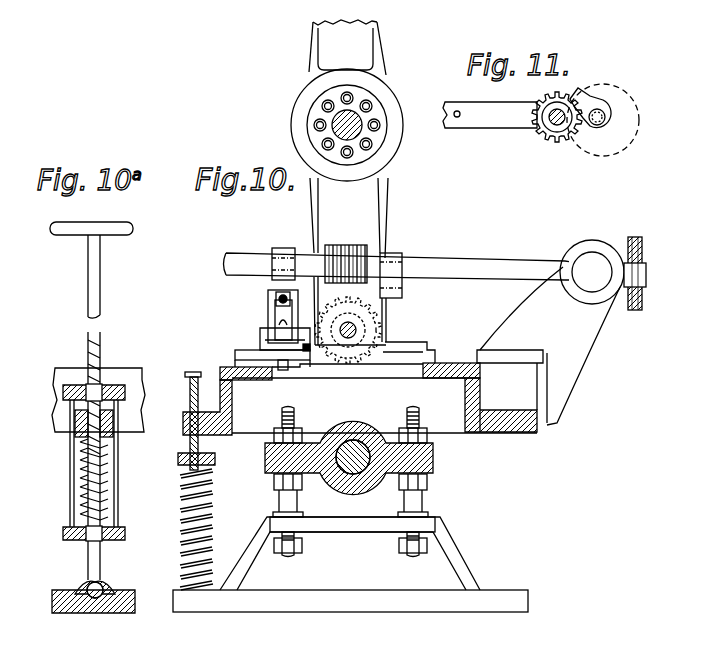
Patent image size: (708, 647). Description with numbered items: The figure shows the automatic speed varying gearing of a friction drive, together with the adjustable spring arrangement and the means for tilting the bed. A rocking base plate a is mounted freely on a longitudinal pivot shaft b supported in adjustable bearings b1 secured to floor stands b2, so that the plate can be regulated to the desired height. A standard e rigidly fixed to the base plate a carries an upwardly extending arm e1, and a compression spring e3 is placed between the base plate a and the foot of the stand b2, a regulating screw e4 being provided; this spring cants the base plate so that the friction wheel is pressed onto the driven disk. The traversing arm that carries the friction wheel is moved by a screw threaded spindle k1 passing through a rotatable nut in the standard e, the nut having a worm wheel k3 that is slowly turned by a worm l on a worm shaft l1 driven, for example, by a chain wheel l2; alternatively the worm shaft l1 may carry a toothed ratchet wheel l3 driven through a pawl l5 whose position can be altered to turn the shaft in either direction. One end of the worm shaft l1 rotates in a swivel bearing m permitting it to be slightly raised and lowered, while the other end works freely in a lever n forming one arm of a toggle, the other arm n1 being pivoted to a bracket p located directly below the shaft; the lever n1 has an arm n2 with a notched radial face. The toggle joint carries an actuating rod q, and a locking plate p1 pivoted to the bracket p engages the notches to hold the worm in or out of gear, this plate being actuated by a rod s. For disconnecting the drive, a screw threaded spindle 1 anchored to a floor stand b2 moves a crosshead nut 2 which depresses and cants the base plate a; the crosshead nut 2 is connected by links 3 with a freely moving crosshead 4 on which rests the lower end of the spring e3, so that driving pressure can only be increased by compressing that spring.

In FIG. 10, the standard e is at (368, 197).
In FIG. 10, the upwardly extending arm e1 is at (360, 56).
In FIG. 10, the compression spring e3 is at (213, 527).
In FIG. 10A, the compression spring e3 is at (85, 488).
In FIG. 10, the regulating screw e4 is at (190, 395).
In FIG. 10, the worm l is at (344, 247).
In FIG. 10, the worm shaft l1 is at (485, 264).
In FIG. 10, the chain wheel l2 is at (628, 250).
In FIG. 11, the toothed ratchet wheel l3 is at (545, 99).
In FIG. 11, the pawl l5 is at (607, 95).
In FIG. 10, the swivel bearing m is at (590, 261).
In FIG. 10, the lever n is at (280, 251).
In FIG. 10, the toggle arm n1 is at (268, 318).
In FIG. 10, the arm n2 is at (283, 372).
In FIG. 10, the actuating rod q is at (275, 293).
In FIG. 10, the bracket p is at (258, 336).
In FIG. 10, the locking plate p1 is at (255, 352).
In FIG. 10, the rod s is at (307, 352).
In FIG. 10, the screw threaded spindle k1 is at (356, 331).
In FIG. 10, the worm wheel k3 is at (400, 344).
In FIG. 10, the rocking base plate a is at (352, 404).
In FIG. 10A, the rocking base plate a is at (142, 420).
In FIG. 10, the longitudinal pivot shaft b is at (341, 428).
In FIG. 10, the adjustable bearings b1 is at (432, 463).
In FIG. 10, the floor stands b2 is at (252, 560).
In FIG. 10A, the screw threaded spindle 1 is at (98, 343).
In FIG. 10A, the crosshead nut 2 is at (103, 383).
In FIG. 10A, the links 3 is at (70, 464).
In FIG. 10A, the crosshead 4 is at (80, 540).